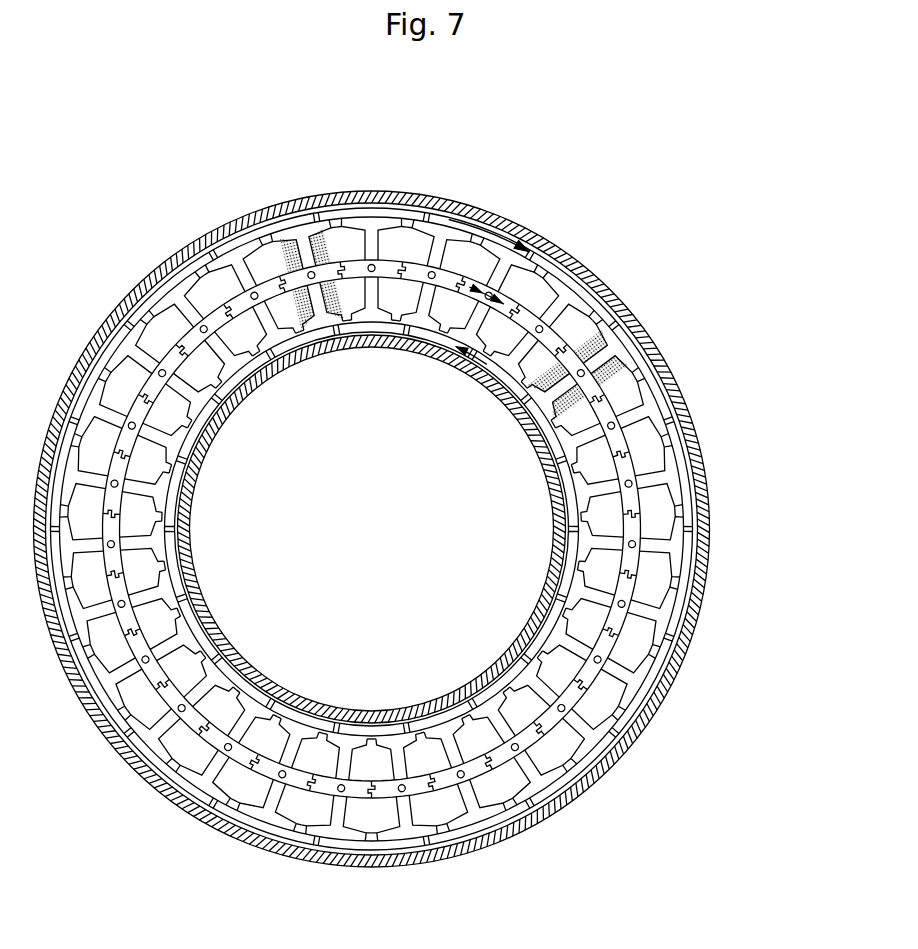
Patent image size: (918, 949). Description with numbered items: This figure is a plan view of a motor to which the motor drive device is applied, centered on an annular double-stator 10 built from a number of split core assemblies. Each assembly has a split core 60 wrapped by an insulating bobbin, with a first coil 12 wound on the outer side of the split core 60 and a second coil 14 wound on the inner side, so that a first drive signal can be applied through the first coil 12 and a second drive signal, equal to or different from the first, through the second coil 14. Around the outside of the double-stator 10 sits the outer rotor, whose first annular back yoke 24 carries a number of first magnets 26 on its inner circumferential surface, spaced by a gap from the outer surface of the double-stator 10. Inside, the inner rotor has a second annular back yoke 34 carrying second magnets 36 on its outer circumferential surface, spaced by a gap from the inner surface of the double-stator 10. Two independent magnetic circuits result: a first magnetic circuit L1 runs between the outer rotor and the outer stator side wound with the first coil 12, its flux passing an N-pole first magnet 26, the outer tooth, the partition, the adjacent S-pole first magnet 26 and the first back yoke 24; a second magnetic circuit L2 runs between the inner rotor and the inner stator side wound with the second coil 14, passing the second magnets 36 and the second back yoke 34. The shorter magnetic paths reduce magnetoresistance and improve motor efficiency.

The double-stator 10 is at (272, 248).
The first coil 12 is at (617, 382).
The second coil 14 is at (540, 375).
The first annular back yoke 24 is at (377, 192).
The first magnets 26 is at (698, 447).
The second annular back yoke 34 is at (374, 340).
The second magnets 36 is at (537, 410).
The split core 60 is at (603, 357).
The first magnetic circuit L1 is at (547, 250).
The second magnetic circuit L2 is at (572, 338).